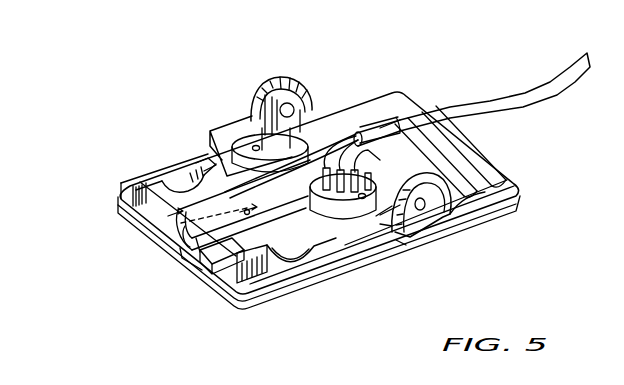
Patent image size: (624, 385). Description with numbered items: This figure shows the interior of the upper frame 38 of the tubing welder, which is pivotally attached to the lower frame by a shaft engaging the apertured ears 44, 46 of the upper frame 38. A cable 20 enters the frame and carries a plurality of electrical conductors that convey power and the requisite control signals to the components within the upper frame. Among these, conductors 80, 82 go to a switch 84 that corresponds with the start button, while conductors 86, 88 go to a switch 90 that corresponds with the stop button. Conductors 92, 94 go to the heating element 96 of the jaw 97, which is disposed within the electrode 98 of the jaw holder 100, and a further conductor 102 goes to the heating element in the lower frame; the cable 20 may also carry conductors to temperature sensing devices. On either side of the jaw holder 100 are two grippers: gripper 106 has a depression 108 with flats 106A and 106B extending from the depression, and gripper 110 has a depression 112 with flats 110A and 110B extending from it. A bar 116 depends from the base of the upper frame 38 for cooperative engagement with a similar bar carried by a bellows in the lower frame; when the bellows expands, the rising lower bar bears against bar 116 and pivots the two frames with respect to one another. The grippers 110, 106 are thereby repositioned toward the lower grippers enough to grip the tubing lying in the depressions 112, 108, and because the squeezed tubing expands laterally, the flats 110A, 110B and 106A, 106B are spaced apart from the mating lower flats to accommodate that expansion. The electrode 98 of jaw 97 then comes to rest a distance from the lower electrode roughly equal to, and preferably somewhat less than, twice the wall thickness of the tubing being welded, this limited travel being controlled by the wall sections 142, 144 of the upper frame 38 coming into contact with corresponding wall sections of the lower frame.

The cable 20 is at (562, 71).
The upper frame 38 is at (522, 190).
The apertured ear 44 is at (462, 238).
The apertured ear 46 is at (287, 80).
The conductor 80 is at (447, 134).
The conductor 82 is at (347, 168).
The switch 84 is at (405, 245).
The conductor 86 is at (303, 130).
The conductor 88 is at (318, 134).
The switch 90 is at (258, 137).
The conductor 92 is at (388, 220).
The conductor 94 is at (293, 172).
The heating element 96 is at (172, 252).
The jaw 97 is at (166, 216).
The electrode 98 is at (160, 238).
The jaw holder 100 is at (182, 260).
The conductor 102 is at (210, 140).
The gripper 106 is at (236, 283).
The flat 106A is at (200, 284).
The flat 106B is at (303, 288).
The depression 108 is at (290, 282).
The gripper 110 is at (134, 200).
The flat 110A is at (146, 184).
The flat 110B is at (190, 173).
The depression 112 is at (176, 190).
The bar 116 is at (463, 187).
The wall section 142 is at (388, 240).
The wall section 144 is at (245, 142).